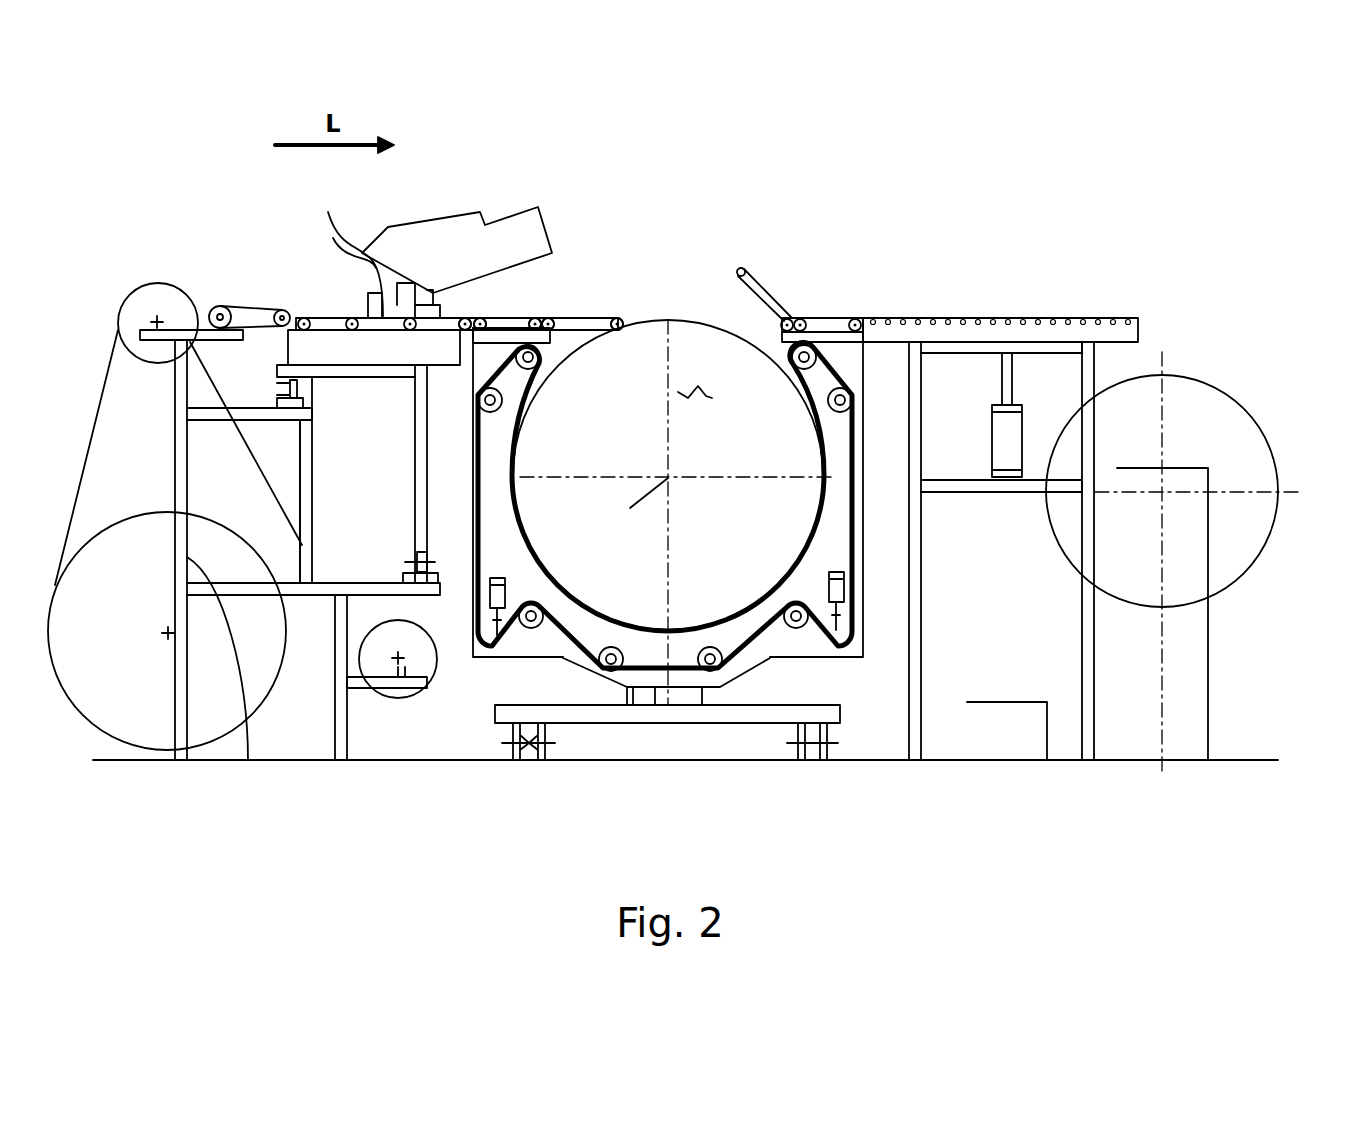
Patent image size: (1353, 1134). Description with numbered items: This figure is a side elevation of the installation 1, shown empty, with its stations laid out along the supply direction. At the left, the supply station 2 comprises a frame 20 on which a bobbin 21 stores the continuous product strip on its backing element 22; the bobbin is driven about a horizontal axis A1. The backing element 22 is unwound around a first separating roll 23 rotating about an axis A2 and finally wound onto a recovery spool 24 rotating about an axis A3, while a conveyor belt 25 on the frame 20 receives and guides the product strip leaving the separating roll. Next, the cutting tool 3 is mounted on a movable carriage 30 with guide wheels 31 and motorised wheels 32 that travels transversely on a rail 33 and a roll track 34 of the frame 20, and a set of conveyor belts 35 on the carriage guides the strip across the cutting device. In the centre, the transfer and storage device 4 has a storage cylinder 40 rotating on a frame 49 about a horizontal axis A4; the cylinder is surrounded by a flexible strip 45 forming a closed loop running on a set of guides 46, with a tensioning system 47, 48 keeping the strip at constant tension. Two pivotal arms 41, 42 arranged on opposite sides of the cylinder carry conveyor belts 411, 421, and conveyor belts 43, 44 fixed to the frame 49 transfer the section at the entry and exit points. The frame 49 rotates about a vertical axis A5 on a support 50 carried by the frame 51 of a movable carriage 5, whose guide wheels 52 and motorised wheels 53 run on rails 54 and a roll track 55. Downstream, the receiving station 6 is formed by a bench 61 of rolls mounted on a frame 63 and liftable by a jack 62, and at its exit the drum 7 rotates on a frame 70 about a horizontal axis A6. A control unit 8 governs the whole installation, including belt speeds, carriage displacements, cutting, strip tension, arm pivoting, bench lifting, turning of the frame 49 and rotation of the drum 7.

The installation 1 is at (1100, 782).
The supply station 2 is at (228, 481).
The frame 20 is at (300, 503).
The bobbin 21 is at (107, 712).
The backing element 22 is at (82, 468).
The first separating roll 23 is at (138, 317).
The recovery spool 24 is at (370, 750).
The conveyor belt 25 is at (245, 300).
The cutting tool 3 is at (417, 350).
The movable carriage 30 is at (332, 308).
The guide wheels 31 is at (303, 383).
The motorised wheels 32 is at (423, 552).
The rail 33 is at (303, 393).
The roll track 34 is at (405, 578).
The set of conveyor belts 35 is at (334, 320).
The transfer and storage device 4 is at (729, 481).
The storage cylinder 40 is at (700, 330).
The arm 41 is at (827, 317).
The conveyor belt 411 is at (748, 315).
The arm 42 is at (583, 320).
The conveyor belt 421 is at (602, 320).
The conveyor belt 43 is at (845, 318).
The conveyor belt 44 is at (527, 320).
The flexible strip 45 is at (490, 472).
The set of guides 46 is at (850, 403).
The tensioning system 47 is at (507, 577).
The tensioning system 48 is at (828, 597).
The frame 49 is at (845, 322).
The movable carriage 5 is at (674, 773).
The support 50 is at (657, 690).
The frame 51 is at (755, 713).
The guide wheels 52 is at (503, 738).
The motorised wheels 53 is at (827, 743).
The rails 54 is at (530, 762).
The roll track 55 is at (812, 762).
The receiving station 6 is at (1004, 481).
The bench 61 is at (1080, 320).
The jack 62 is at (990, 467).
The frame 63 is at (990, 493).
The drum 7 is at (1178, 563).
The frame 70 is at (1208, 638).
The control unit 8 is at (995, 750).
The axis A1 is at (165, 635).
The axis A2 is at (157, 320).
The axis A3 is at (405, 667).
The axis A4 is at (632, 505).
The second axis A5 is at (711, 399).
The axis A6 is at (1170, 492).